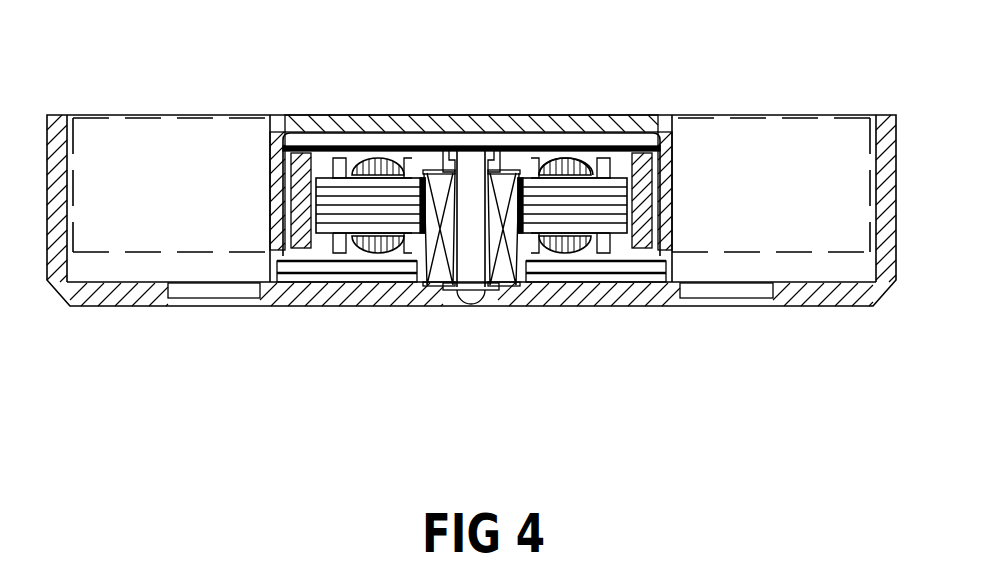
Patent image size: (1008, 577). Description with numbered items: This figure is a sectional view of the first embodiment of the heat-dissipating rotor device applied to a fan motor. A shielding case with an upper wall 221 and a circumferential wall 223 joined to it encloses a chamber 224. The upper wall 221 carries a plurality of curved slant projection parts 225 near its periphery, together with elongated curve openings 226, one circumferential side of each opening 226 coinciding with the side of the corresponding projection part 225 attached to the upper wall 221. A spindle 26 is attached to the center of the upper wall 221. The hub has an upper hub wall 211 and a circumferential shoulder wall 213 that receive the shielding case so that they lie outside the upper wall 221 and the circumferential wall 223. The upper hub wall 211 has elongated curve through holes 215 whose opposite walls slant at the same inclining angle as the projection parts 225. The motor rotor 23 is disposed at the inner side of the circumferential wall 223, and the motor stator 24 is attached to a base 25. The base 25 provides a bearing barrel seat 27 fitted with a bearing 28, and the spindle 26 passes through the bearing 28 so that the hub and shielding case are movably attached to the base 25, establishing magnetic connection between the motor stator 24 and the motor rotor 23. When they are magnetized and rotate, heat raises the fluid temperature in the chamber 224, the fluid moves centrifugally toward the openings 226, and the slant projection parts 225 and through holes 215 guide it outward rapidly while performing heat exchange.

The upper hub wall 211 is at (546, 128).
The circumferential shoulder wall 213 is at (277, 177).
The elongated curve through hole 215 is at (580, 151).
The upper wall 221 is at (439, 145).
The circumferential wall 223 is at (283, 213).
The chamber 224 is at (592, 160).
The slant projection part 225 is at (361, 156).
The elongated curve opening 226 is at (318, 150).
The motor rotor 23 is at (650, 232).
The motor stator 24 is at (576, 226).
The base 25 is at (360, 300).
The spindle 26 is at (473, 257).
The bearing barrel seat 27 is at (423, 173).
The bearing 28 is at (443, 272).